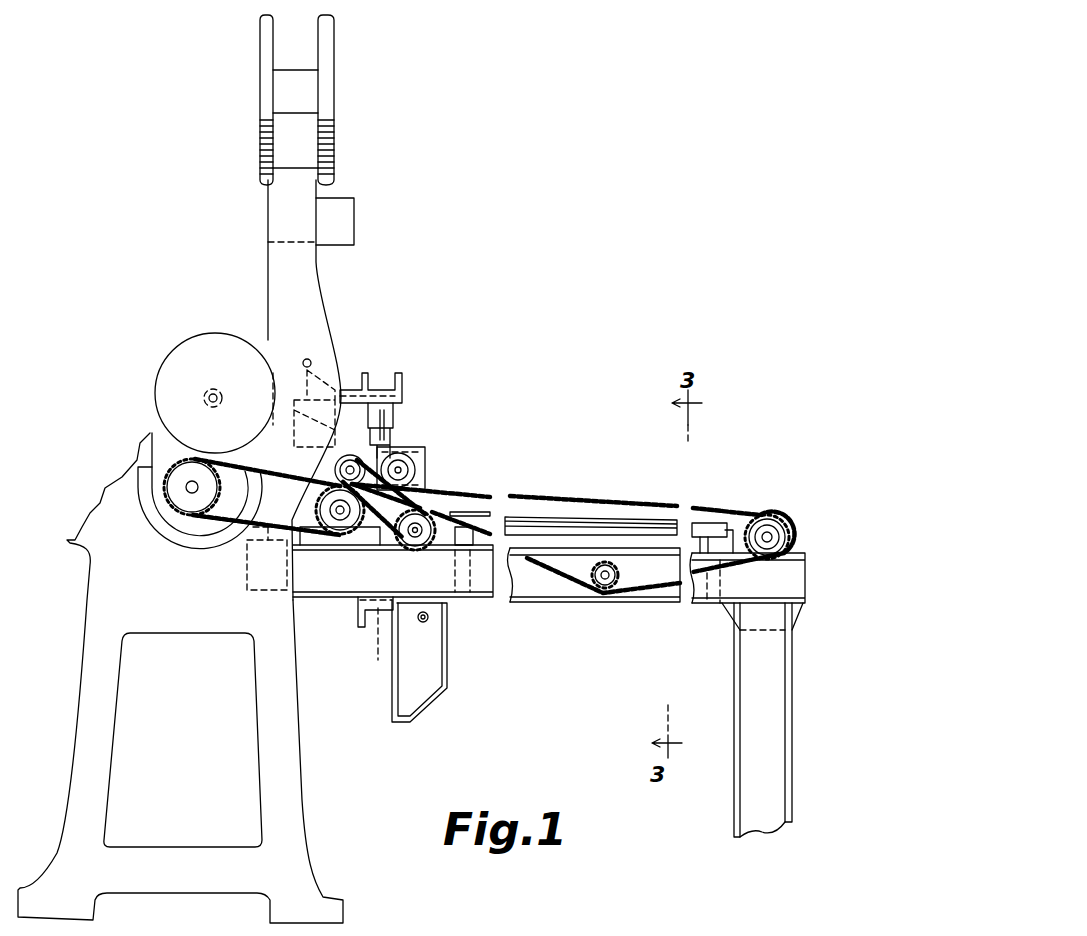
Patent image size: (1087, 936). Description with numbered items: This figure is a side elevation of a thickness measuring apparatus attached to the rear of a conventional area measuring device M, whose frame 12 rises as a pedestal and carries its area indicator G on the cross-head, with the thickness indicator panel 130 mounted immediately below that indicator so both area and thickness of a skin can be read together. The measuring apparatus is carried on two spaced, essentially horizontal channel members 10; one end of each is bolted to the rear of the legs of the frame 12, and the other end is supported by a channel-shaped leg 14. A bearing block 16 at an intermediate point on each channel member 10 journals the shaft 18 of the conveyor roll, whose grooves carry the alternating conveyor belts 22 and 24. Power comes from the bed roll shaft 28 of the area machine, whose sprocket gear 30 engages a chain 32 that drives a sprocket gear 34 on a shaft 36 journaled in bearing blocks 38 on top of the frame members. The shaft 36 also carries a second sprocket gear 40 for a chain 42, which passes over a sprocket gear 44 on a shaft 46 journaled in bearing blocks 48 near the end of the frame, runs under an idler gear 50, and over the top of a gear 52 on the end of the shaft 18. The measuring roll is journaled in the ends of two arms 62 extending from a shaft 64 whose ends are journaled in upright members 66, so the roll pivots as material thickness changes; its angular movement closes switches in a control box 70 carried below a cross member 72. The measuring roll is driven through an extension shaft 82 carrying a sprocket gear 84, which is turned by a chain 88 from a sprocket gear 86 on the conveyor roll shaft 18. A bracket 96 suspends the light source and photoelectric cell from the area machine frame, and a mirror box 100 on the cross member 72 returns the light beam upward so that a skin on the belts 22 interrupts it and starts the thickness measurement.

The indicator G is at (325, 93).
The area measuring device M is at (148, 360).
The indicator panel 130 is at (355, 216).
The frame 12 is at (270, 717).
The chain 32 is at (232, 545).
The shaft 28 is at (182, 488).
The sprocket gear 30 is at (188, 491).
The sprocket gear 34 is at (305, 520).
The second sprocket gear 40 is at (312, 485).
The shaft 36 is at (330, 540).
The bearing blocks 38 is at (340, 558).
The sprocket gear 84 is at (338, 466).
The extension shaft 82 is at (362, 455).
The upright members 66 is at (402, 452).
The arms 62 is at (406, 470).
The shaft 64 is at (410, 466).
The bracket 96 is at (346, 378).
The gear 52 is at (400, 540).
The chain 42 is at (440, 494).
The shaft 18 is at (482, 505).
The sprocket gear 86 is at (440, 571).
The chain 88 is at (430, 493).
The conveyor belts 22 is at (370, 562).
The cross member 72 is at (362, 622).
The mirror box 100 is at (380, 660).
The control box 70 is at (430, 673).
The bearing block 16 is at (520, 490).
The conveyor belts 24 is at (560, 517).
The channel members 10 is at (542, 590).
The idler gear 50 is at (604, 588).
The sprocket gear 44 is at (768, 515).
The shaft 46 is at (772, 532).
The bearing blocks 48 is at (747, 566).
The leg 14 is at (748, 666).